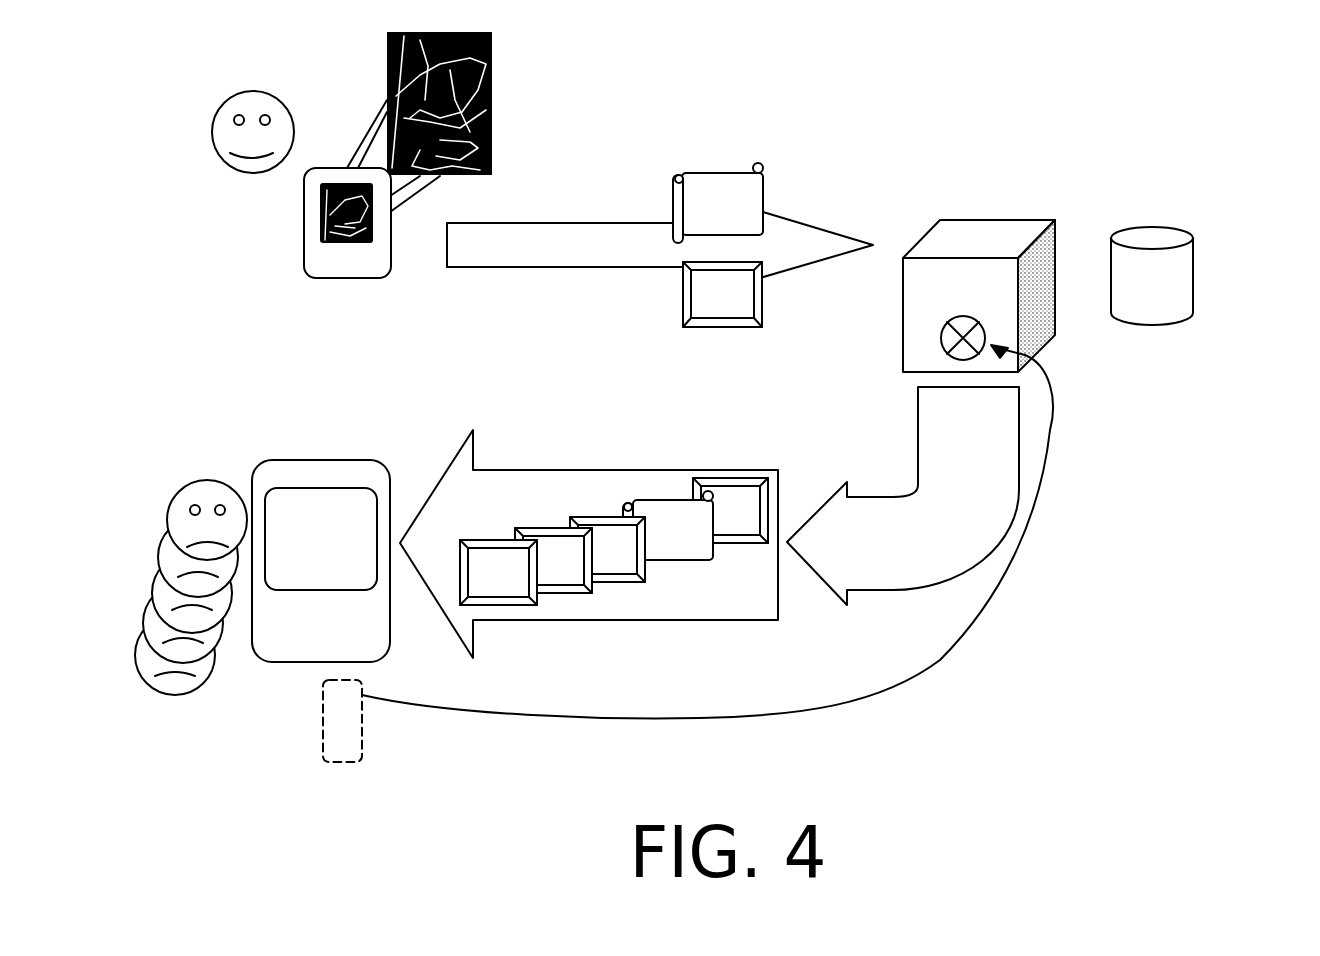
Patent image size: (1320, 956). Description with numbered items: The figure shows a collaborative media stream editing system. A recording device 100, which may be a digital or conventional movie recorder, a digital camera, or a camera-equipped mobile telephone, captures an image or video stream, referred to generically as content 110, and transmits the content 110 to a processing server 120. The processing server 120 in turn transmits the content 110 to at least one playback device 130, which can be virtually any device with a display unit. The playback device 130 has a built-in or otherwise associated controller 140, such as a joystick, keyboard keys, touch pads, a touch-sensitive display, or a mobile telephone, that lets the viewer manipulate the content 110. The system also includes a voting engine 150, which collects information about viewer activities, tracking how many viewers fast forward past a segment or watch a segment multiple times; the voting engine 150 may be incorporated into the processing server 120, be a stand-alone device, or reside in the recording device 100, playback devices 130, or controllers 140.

The recording device 100 is at (310, 245).
The content 110 is at (660, 216).
The processing server 120 is at (977, 228).
The playback device 130 is at (300, 470).
The controller 140 is at (332, 718).
The voting engine 150 is at (1193, 295).